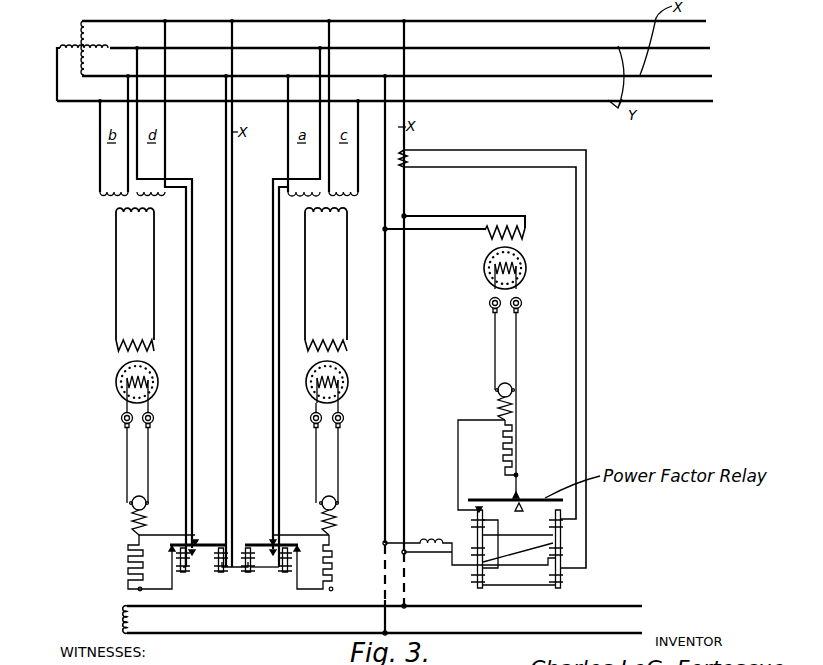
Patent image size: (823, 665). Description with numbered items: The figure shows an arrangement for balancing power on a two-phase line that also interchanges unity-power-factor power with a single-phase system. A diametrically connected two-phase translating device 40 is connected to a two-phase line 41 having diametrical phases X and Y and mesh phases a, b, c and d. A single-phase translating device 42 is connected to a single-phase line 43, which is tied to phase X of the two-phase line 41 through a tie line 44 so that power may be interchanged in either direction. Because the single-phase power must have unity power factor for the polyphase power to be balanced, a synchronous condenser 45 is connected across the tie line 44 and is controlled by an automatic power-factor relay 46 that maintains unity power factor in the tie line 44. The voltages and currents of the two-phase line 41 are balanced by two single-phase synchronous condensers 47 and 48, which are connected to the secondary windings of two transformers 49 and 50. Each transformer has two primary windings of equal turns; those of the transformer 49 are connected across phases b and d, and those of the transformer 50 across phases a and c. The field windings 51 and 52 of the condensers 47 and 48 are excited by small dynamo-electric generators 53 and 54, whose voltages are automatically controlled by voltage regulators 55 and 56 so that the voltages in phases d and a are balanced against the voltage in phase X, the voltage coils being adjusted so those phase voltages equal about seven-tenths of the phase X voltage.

The two-phase translating device 40 is at (82, 48).
The two-phase line 41 is at (697, 40).
The single-phase translating device 42 is at (124, 616).
The single-phase line 43 is at (282, 631).
The tie line 44 is at (384, 580).
The synchronous condenser 45 is at (551, 261).
The automatic power-factor relay 46 is at (531, 531).
The single-phase synchronous condenser 47 is at (114, 377).
The single-phase synchronous condenser 48 is at (370, 369).
The transformer 49 is at (113, 210).
The transformer 50 is at (348, 206).
The field winding 51 is at (124, 398).
The field winding 52 is at (317, 398).
The dynamo-electric generator 53 is at (132, 504).
The dynamo-electric generator 54 is at (337, 508).
The voltage regulator 55 is at (215, 593).
The voltage regulator 56 is at (276, 593).